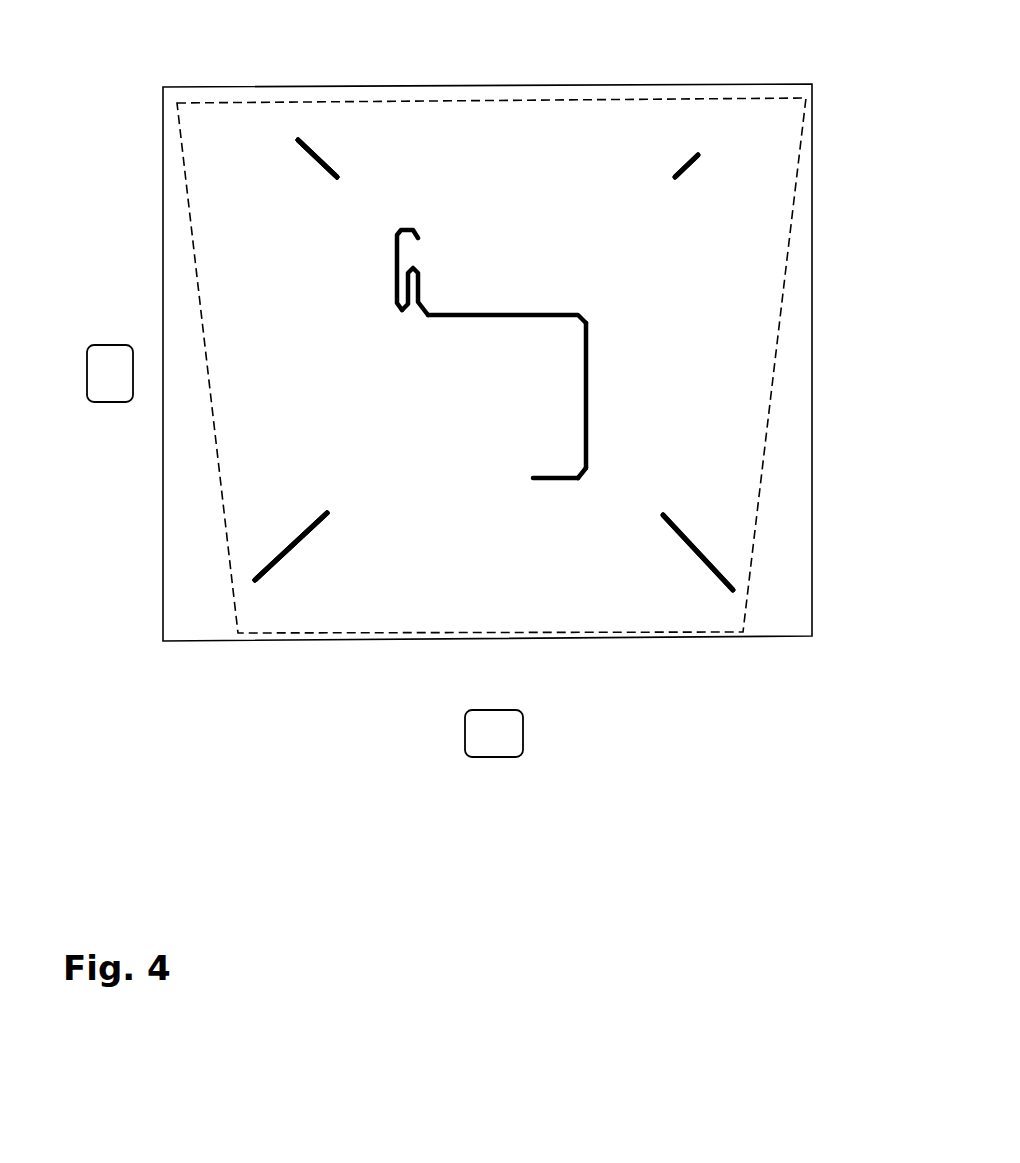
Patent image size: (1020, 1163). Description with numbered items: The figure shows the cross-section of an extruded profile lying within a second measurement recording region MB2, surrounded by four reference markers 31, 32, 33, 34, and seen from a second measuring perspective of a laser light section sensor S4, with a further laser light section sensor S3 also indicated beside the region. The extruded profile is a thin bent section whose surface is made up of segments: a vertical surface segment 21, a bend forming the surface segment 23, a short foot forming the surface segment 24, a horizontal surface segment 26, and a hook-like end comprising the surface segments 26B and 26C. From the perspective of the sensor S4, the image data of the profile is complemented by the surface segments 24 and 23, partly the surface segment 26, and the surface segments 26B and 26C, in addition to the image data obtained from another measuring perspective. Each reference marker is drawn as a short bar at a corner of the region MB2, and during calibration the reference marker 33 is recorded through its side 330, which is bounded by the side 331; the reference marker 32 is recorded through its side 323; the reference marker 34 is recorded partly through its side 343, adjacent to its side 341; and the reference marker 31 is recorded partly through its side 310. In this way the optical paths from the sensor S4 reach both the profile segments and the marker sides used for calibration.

The second measurement recording region MB2 is at (213, 411).
The laser light section sensor S3 is at (112, 355).
The laser light section sensor S4 is at (496, 733).
The reference marker 34 is at (296, 135).
The side of reference marker 341 is at (340, 179).
The side of reference marker 343 is at (312, 163).
The reference marker 31 is at (707, 150).
The side of reference marker 310 is at (688, 167).
The reference marker 33 is at (250, 588).
The side of reference marker 330 is at (293, 548).
The side of reference marker 331 is at (330, 512).
The reference marker 32 is at (737, 600).
The side of reference marker 323 is at (692, 552).
The surface segment 26C is at (396, 312).
The surface segment 26B is at (410, 312).
The surface segment 26 is at (493, 320).
The surface segment 21 is at (588, 390).
The surface segment 23 is at (585, 479).
The surface segment 24 is at (548, 483).